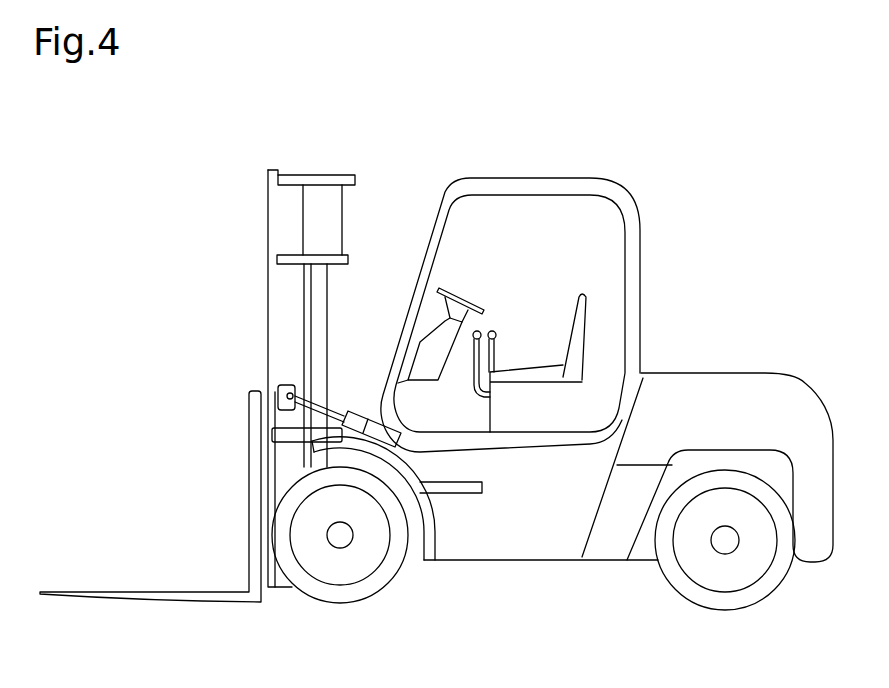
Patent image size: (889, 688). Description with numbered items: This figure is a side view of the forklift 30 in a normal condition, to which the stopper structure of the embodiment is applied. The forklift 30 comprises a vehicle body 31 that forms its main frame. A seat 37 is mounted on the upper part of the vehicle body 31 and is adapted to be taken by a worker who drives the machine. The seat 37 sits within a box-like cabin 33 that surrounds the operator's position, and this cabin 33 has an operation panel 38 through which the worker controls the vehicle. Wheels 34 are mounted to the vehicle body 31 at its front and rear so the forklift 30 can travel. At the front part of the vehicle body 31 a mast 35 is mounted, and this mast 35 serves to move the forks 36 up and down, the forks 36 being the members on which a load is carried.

The forklift 30 is at (661, 224).
The vehicle body 31 is at (532, 547).
The box-like cabin 33 is at (540, 188).
The wheels 34 is at (353, 598).
The mast 35 is at (277, 283).
The forks 36 is at (173, 592).
The seat 37 is at (587, 313).
The operation panel 38 is at (440, 250).